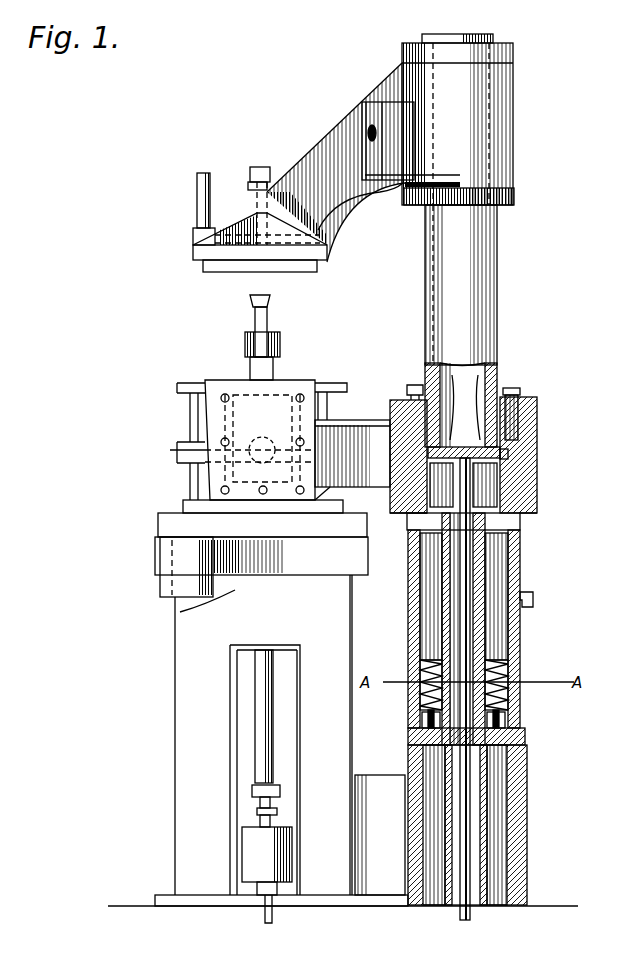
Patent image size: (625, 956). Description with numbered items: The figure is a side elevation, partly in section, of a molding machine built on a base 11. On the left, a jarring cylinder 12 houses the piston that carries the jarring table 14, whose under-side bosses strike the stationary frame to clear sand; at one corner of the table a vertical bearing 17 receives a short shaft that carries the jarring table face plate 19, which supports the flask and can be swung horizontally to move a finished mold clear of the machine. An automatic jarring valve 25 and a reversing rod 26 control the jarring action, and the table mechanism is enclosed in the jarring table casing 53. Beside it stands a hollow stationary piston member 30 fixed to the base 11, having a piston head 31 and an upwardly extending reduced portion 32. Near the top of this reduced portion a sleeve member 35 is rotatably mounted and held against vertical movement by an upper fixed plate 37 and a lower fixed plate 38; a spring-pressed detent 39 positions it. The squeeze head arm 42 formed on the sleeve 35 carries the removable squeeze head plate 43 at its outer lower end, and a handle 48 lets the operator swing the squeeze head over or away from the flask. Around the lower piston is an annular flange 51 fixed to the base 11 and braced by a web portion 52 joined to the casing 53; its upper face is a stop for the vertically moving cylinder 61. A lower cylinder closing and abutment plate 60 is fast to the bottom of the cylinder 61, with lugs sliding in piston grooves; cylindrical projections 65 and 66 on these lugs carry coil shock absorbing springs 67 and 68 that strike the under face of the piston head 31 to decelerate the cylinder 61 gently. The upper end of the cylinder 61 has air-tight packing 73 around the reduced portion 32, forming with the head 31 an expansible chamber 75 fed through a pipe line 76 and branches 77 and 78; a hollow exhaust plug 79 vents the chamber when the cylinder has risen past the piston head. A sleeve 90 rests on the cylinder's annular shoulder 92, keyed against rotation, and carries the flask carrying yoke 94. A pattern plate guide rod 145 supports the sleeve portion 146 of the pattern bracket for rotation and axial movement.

The base 11 is at (186, 900).
The cylinder 12 is at (237, 766).
The jarring table 14 is at (362, 560).
The vertical bearing 17 is at (165, 588).
The jarring table face plate 19 is at (167, 525).
The automatic jarring valve 25 is at (253, 863).
The reversing rod 26 is at (273, 722).
The piston member 30 is at (488, 840).
The piston head 31 is at (500, 506).
The reduced portion 32 is at (478, 35).
The sleeve member 35 is at (513, 139).
The upper fixed plate 37 is at (408, 53).
The lower fixed plate 38 is at (514, 200).
The spring-pressed detent 39 is at (368, 128).
The squeeze head arm 42 is at (323, 150).
The squeeze head plate 43 is at (200, 262).
The handle 48 is at (197, 210).
The annular flange 51 is at (525, 880).
The web portion 52 is at (388, 882).
The jarring table casing 53 is at (183, 675).
The lower cylinder closing and abutment plate 60 is at (510, 740).
The cylinder 61 is at (520, 572).
The cylindrical projection 65 is at (422, 718).
The cylindrical projection 66 is at (508, 714).
The coil shock absorbing spring 67 is at (420, 668).
The coil shock absorbing spring 68 is at (508, 672).
The air-tight packing 73 is at (400, 410).
The expansible chamber 75 is at (508, 455).
The pipe line 76 is at (462, 632).
The branch 77 is at (430, 385).
The branch 78 is at (497, 380).
The hollow exhaust plug 79 is at (533, 600).
The sleeve 90 is at (537, 432).
The annular shoulder 92 is at (519, 409).
The yoke 94 is at (368, 440).
The pattern plate guide rod 145 is at (255, 315).
The sleeve portion 146 is at (262, 370).